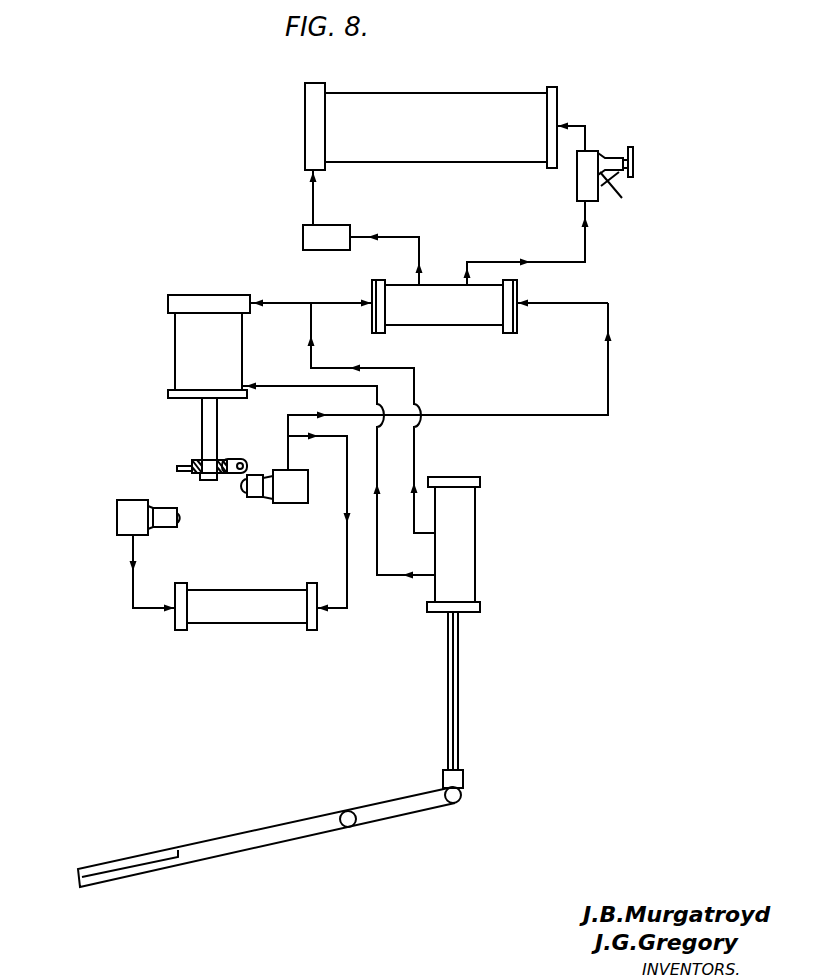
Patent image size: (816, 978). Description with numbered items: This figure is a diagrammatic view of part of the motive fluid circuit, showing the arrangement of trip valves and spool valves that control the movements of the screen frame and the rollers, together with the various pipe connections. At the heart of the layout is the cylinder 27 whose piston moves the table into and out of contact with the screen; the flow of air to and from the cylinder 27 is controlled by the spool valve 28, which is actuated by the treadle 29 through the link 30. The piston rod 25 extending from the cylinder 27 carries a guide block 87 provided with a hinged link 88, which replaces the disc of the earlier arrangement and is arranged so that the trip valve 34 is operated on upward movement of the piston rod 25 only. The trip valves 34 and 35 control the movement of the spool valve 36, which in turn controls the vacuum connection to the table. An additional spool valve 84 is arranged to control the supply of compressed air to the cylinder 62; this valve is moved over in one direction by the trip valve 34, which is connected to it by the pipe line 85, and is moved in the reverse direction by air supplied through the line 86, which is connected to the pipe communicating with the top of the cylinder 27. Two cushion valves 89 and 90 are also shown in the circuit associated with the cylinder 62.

The cylinder 62 is at (420, 100).
The cushion valve 89 is at (325, 240).
The cushion valve 90 is at (622, 198).
The line 86 is at (343, 300).
The spool valve 84 is at (481, 307).
The pipe line 85 is at (518, 413).
The cylinder 27 is at (195, 350).
The piston rod 25 is at (210, 440).
The hinged link 88 is at (237, 462).
The guide block 87 is at (182, 468).
The trip valve 34 is at (253, 488).
The trip valve 35 is at (182, 518).
The spool valve 36 is at (242, 610).
The spool valve 28 is at (458, 533).
The link 30 is at (458, 697).
The treadle 29 is at (282, 828).